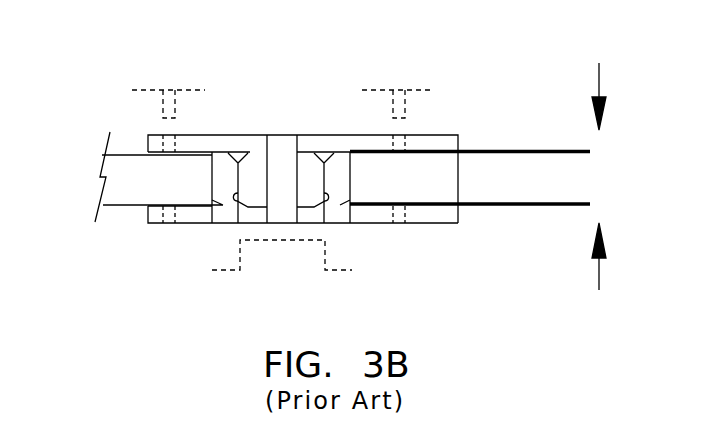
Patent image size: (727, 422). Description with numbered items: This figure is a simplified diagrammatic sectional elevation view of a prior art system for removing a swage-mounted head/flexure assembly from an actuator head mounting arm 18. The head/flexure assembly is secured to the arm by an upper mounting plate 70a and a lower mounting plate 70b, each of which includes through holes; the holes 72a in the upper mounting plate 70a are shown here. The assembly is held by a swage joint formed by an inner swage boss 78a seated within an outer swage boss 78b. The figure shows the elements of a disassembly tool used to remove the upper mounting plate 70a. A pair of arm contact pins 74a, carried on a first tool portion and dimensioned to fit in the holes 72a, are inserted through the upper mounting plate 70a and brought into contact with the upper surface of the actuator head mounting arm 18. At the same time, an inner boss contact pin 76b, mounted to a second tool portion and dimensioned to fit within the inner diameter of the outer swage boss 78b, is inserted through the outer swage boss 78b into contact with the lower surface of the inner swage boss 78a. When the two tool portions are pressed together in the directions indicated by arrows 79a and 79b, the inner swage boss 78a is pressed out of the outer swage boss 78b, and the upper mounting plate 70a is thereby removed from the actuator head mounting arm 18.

The actuator head mounting arm 18 is at (120, 172).
The upper mounting plate 70a is at (418, 133).
The lower mounting plate 70b is at (420, 227).
The through holes 72a is at (397, 140).
The arm contact pins 74a is at (398, 105).
The inner boss contact pin 76b is at (290, 250).
The inner swage boss 78a is at (312, 183).
The outer swage boss 78b is at (225, 176).
The arrow 79a is at (627, 96).
The arrow 79b is at (627, 256).